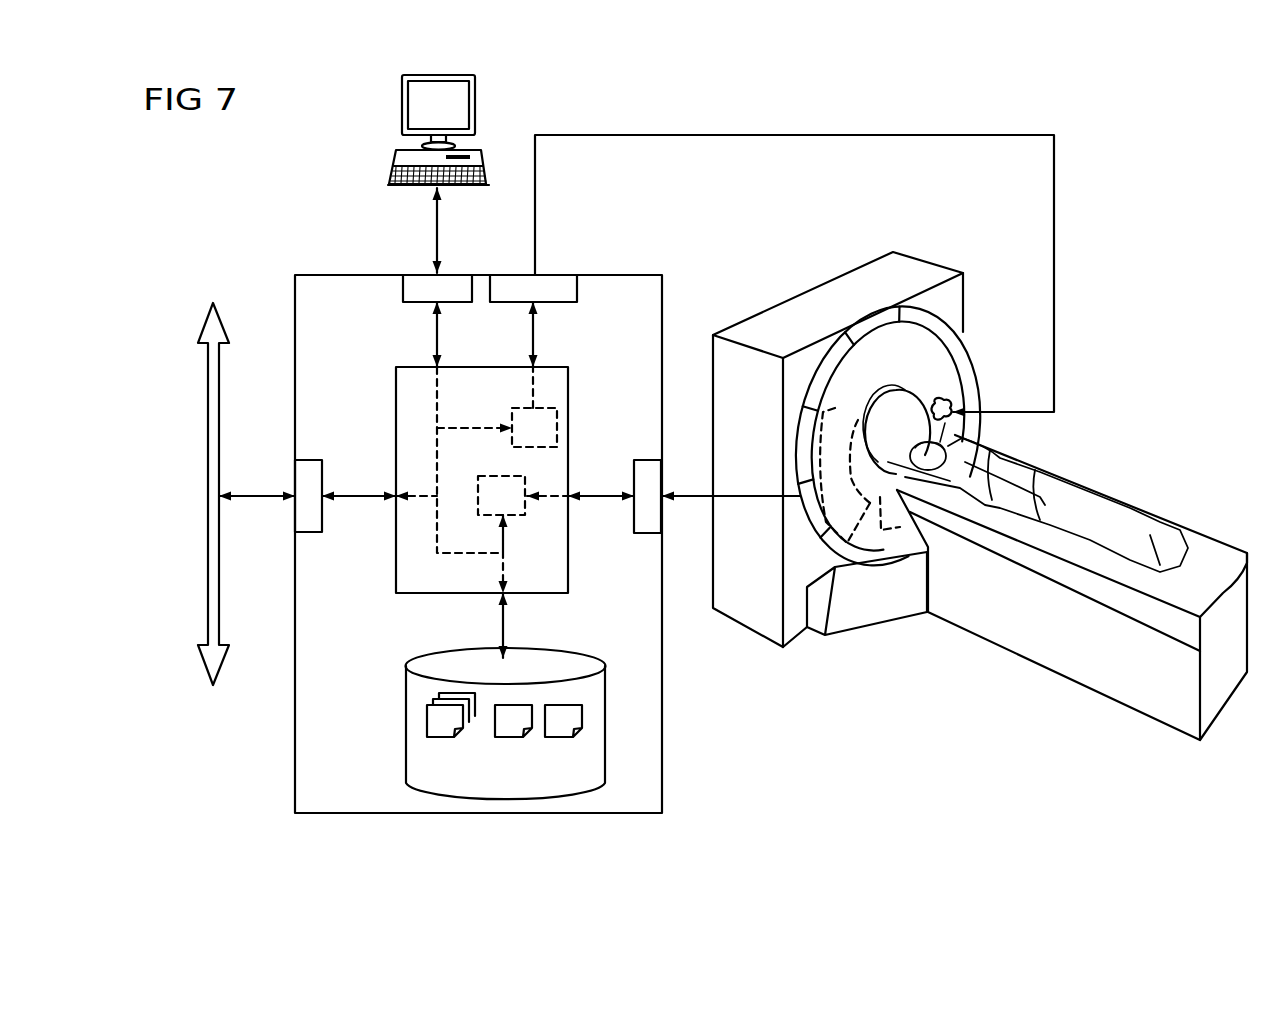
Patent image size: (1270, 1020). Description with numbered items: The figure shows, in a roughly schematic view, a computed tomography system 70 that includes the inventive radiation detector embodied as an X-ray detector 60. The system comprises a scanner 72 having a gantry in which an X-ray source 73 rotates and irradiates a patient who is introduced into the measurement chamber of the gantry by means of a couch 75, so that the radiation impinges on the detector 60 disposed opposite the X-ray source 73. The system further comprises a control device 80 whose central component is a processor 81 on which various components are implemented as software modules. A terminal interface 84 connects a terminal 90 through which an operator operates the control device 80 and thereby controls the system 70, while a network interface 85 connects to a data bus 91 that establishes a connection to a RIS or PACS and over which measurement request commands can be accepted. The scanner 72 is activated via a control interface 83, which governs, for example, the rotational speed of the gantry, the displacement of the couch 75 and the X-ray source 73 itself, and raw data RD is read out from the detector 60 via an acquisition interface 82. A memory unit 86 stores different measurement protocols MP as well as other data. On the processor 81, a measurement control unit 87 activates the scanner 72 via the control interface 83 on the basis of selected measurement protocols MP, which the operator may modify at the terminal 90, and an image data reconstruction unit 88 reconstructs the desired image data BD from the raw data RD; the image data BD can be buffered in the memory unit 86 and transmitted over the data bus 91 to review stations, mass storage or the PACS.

The X-ray detector 60 is at (842, 510).
The computed tomography system 70 is at (1132, 347).
The scanner 72 is at (962, 372).
The X-ray source 73 is at (945, 398).
The couch 75 is at (1068, 660).
The control device 80 is at (632, 272).
The processor 81 is at (396, 422).
The acquisition interface 82 is at (645, 527).
The control interface 83 is at (555, 287).
The terminal interface 84 is at (460, 287).
The network interface 85 is at (313, 527).
The memory unit 86 is at (471, 723).
The measurement control unit 87 is at (558, 428).
The image data reconstruction unit 88 is at (510, 516).
The terminal 90 is at (476, 99).
The data bus 91 is at (208, 453).
The raw data RD is at (697, 494).
The measurement protocols MP is at (452, 737).
The image data BD is at (515, 737).